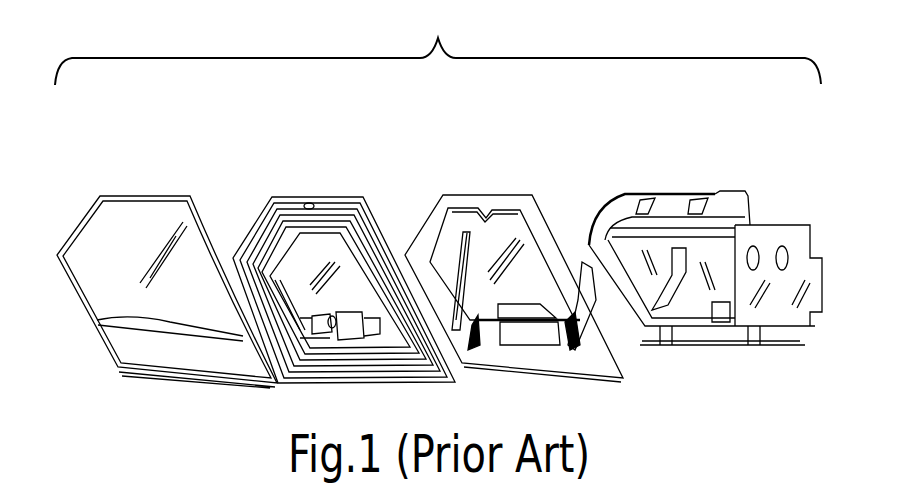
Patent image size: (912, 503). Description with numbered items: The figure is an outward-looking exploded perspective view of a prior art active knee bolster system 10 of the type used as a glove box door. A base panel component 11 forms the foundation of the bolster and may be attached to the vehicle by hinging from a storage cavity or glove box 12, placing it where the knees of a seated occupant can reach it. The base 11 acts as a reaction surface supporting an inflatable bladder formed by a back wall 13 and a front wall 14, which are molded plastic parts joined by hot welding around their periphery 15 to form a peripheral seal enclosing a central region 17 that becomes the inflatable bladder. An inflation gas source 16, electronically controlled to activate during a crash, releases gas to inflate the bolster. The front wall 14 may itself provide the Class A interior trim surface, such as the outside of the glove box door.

The active knee bolster system 10 is at (438, 48).
The base panel component 11 is at (467, 192).
The glove box 12 is at (660, 196).
The back wall 13 is at (281, 196).
The front wall 14 is at (149, 191).
The periphery 15 is at (340, 198).
The inflation gas source 16 is at (352, 330).
The central region 17 is at (335, 248).